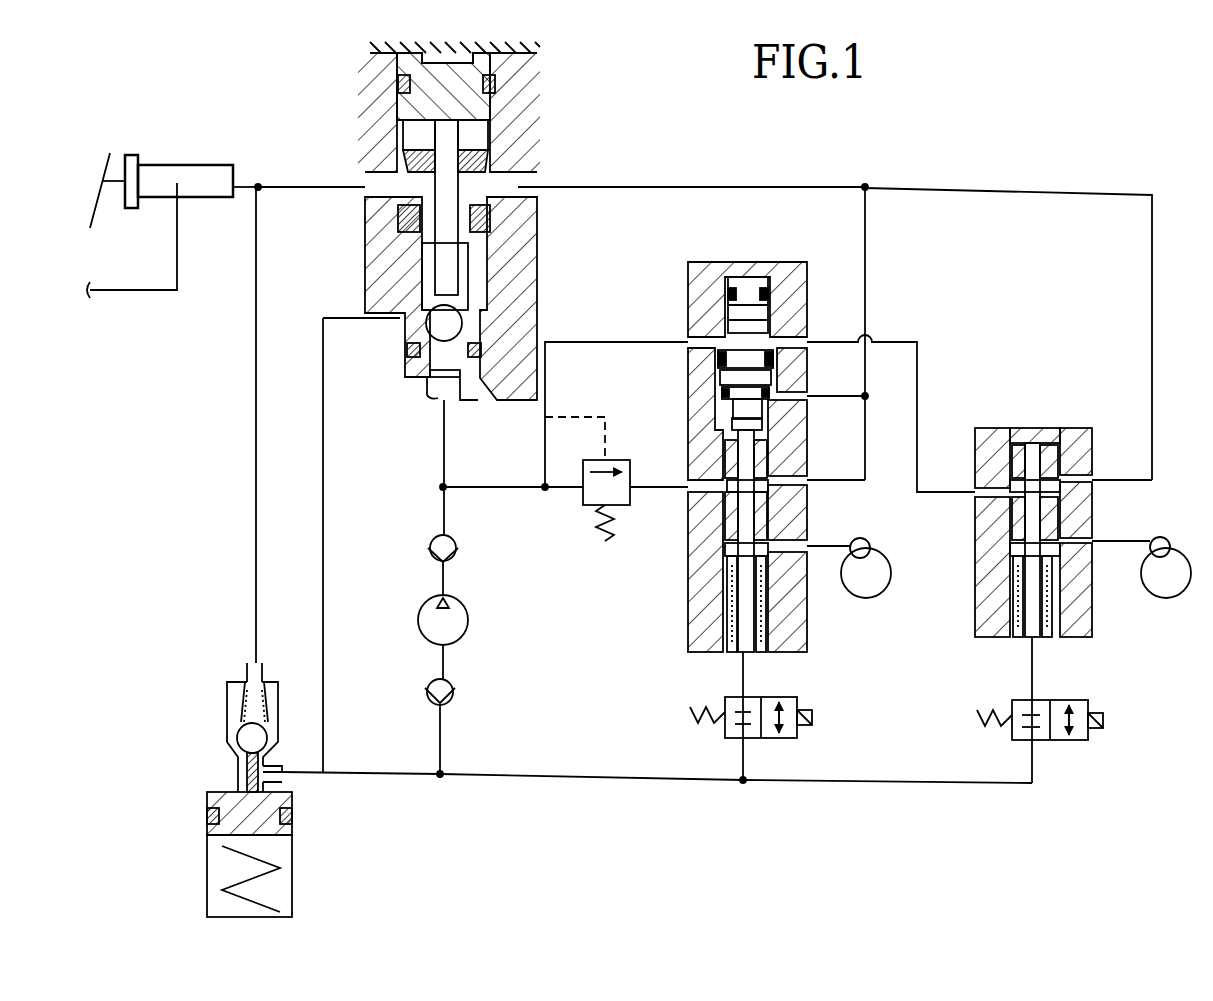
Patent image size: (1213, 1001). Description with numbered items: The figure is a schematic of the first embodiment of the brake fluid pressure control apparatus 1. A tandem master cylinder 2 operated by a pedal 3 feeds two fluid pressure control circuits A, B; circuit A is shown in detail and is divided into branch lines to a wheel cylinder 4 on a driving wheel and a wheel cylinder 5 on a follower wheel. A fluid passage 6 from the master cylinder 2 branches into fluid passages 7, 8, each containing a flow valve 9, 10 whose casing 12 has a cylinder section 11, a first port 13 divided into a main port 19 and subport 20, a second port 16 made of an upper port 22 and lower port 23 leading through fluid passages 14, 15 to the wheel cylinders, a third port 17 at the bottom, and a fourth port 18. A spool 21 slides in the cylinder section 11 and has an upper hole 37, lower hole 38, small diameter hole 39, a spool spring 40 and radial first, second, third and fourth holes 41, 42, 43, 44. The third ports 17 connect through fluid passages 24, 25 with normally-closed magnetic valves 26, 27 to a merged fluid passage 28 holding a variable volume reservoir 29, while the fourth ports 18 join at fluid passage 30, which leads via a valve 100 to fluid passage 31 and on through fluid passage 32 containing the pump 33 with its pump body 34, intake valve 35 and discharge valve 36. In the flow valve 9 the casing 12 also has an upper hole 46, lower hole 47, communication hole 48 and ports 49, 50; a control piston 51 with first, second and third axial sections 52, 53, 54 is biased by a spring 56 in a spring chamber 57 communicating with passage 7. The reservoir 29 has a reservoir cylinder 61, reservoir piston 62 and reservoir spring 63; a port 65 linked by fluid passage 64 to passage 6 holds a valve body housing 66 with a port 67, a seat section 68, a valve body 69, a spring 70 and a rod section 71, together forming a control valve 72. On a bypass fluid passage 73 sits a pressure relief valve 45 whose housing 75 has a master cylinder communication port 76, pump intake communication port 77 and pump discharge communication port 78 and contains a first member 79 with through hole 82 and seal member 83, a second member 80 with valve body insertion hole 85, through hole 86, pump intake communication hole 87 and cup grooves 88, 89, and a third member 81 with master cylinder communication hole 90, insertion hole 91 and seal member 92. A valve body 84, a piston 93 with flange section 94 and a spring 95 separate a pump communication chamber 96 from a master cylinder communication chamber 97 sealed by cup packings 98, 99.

The brake fluid pressure control apparatus 1 is at (205, 435).
The tandem master cylinder 2 is at (185, 163).
The pedal 3 is at (98, 183).
The wheel cylinder 4 is at (870, 548).
The wheel cylinder 5 is at (1172, 555).
The fluid passage 6 is at (330, 182).
The fluid passage 7 is at (866, 240).
The fluid passage 8 is at (962, 190).
The flow valve 9 is at (685, 296).
The flow valve 10 is at (982, 408).
The cylinder section 11 is at (735, 525).
The casing 12 is at (790, 262).
The first port 13 is at (905, 490).
The fluid passage 14 is at (856, 545).
The fluid passage 15 is at (1170, 548).
The second port 16 is at (858, 625).
The third port 17 is at (740, 660).
The fourth port 18 is at (700, 487).
The main port 19 is at (790, 470).
The subport 20 is at (810, 479).
The spool 21 is at (606, 445).
The upper port 22 is at (795, 590).
The lower port 23 is at (790, 620).
The fluid passage 24 is at (743, 768).
The fluid passage 25 is at (1032, 765).
The normally-closed magnetic valve 26 is at (800, 700).
The normally-closed magnetic valve 27 is at (1090, 704).
The fluid passage 28 is at (575, 774).
The variable volume reservoir 29 is at (297, 817).
The fluid passage 30 is at (912, 342).
The fluid passage 31 is at (482, 487).
The fluid passage 32 is at (445, 758).
The pump 33 is at (520, 700).
The pump body 34 is at (468, 627).
The intake valve 35 is at (460, 680).
The discharge valve 36 is at (455, 555).
The upper hole 37 is at (740, 447).
The lower hole 38 is at (740, 580).
The small diameter hole 39 is at (735, 555).
The spool spring 40 is at (745, 595).
The first hole 41 is at (785, 507).
The second hole 42 is at (785, 540).
The third hole 43 is at (765, 655).
The fourth hole 44 is at (735, 472).
The pressure relief valve 45 is at (625, 72).
The upper hole 46 is at (768, 302).
The lower hole 47 is at (790, 346).
The communication hole 48 is at (735, 402).
The port 49 is at (688, 338).
The port 50 is at (780, 330).
The control piston 51 is at (738, 262).
The first axial section 52 is at (730, 310).
The second axial section 53 is at (725, 355).
The third axial section 54 is at (735, 372).
The spring 56 is at (805, 385).
The spring chamber 57 is at (840, 396).
The reservoir cylinder 61 is at (215, 860).
The reservoir piston 62 is at (220, 795).
The reservoir spring 63 is at (258, 886).
The fluid passage 64 is at (255, 568).
The port 65 is at (233, 680).
The valve body housing 66 is at (265, 722).
The port 67 is at (280, 766).
The seat section 68 is at (230, 740).
The valve body 69 is at (232, 720).
The spring 70 is at (265, 720).
The rod section 71 is at (242, 770).
The control valve 72 is at (265, 685).
The fluid passage 73 is at (325, 510).
The housing 75 is at (515, 120).
The master cylinder communication port 76 is at (385, 200).
The pump intake communication port 77 is at (370, 330).
The pump discharge communication port 78 is at (425, 395).
The first member 79 is at (475, 382).
The second member 80 is at (500, 265).
The third member 81 is at (512, 58).
The through hole 82 is at (395, 377).
The seal member 83 is at (490, 355).
The valve body 84 is at (470, 318).
The valve body insertion hole 85 is at (400, 262).
The through hole 86 is at (470, 178).
The pump intake communication hole 87 is at (410, 300).
The cup groove 88 is at (385, 228).
The cup groove 89 is at (410, 120).
The master cylinder communication hole 90 is at (520, 97).
The insertion hole 91 is at (400, 82).
The seal member 92 is at (378, 64).
The piston 93 is at (408, 182).
The flange section 94 is at (480, 245).
The spring 95 is at (480, 285).
The pump communication chamber 96 is at (400, 348).
The master cylinder communication chamber 97 is at (500, 150).
The cup packing 98 is at (540, 188).
The cup packing 99 is at (500, 165).
The valve 100 is at (590, 505).
The fluid pressure control circuit A is at (291, 165).
The fluid pressure control circuit B is at (168, 247).